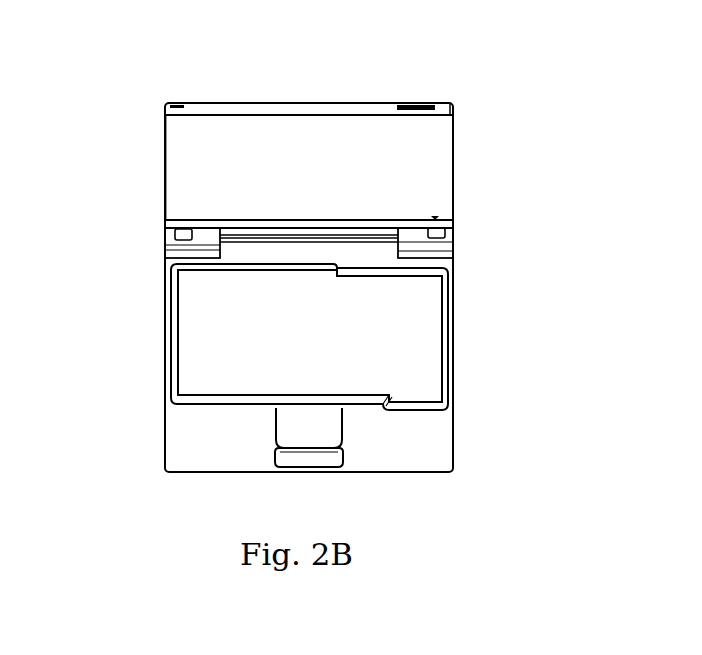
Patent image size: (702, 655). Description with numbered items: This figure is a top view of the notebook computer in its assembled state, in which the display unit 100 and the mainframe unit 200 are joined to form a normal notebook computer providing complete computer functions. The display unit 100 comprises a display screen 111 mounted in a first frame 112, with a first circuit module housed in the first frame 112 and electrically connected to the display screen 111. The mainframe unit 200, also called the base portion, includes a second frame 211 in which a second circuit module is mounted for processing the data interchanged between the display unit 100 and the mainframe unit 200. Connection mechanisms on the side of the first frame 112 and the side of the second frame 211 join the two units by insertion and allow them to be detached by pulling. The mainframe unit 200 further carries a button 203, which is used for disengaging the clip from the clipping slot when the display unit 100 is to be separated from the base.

The display unit 100 is at (160, 161).
The display screen 111 is at (377, 173).
The first frame 112 is at (302, 108).
The button 203 is at (452, 226).
The mainframe unit 200 is at (158, 369).
The second frame 211 is at (455, 430).